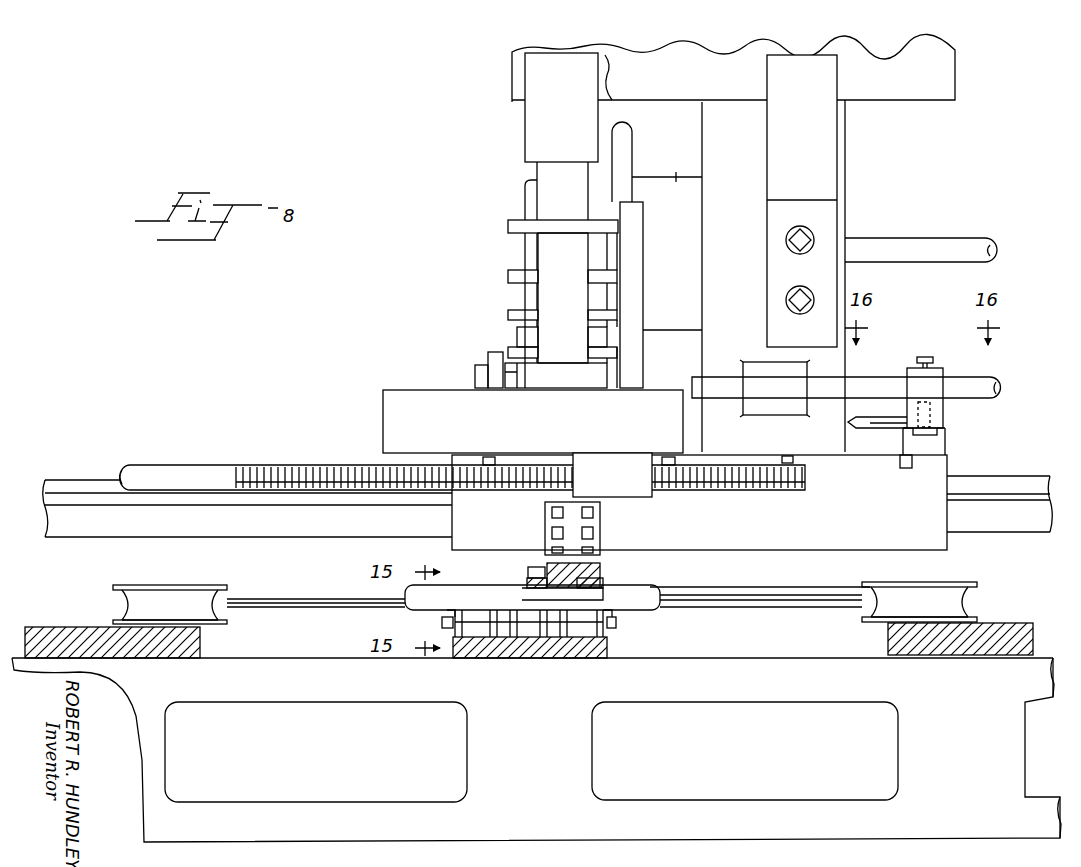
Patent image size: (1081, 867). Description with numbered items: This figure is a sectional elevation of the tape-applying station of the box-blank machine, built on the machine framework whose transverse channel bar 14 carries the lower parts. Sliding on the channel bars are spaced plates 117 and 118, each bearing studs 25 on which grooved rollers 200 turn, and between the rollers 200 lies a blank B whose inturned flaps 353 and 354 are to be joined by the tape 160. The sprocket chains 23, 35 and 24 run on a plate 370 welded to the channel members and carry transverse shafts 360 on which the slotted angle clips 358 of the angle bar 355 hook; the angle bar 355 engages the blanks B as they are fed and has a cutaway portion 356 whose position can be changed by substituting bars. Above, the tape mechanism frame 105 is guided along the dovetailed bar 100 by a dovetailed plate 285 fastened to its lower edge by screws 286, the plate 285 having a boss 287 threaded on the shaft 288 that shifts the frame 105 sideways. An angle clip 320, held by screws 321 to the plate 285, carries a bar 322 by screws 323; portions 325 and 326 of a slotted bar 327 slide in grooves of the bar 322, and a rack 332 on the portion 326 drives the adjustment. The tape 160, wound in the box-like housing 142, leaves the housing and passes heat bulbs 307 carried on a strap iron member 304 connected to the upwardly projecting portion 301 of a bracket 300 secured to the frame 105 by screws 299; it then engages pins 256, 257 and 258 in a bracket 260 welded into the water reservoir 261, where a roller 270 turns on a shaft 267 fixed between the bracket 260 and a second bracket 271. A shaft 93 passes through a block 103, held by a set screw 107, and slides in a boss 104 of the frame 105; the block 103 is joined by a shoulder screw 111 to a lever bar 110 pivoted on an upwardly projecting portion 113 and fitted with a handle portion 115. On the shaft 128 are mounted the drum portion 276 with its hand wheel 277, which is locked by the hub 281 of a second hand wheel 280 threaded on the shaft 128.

The transverse channel bar 14 is at (775, 697).
The sprocket chain 23 is at (530, 647).
The sprocket chain 24 is at (579, 647).
The stud 25 is at (926, 617).
The sprocket chain 35 is at (526, 647).
The shaft 93 is at (966, 382).
The dovetailed bar 100 is at (1010, 538).
The block 103 is at (908, 370).
The boss 104 is at (775, 408).
The tape mechanism frame 105 is at (847, 158).
The set screw 107 is at (928, 357).
The lever bar 110 is at (890, 429).
The shoulder screw 111 is at (938, 432).
The upwardly projecting portion 113 is at (940, 446).
The handle portion 115 is at (852, 418).
The plate 117 is at (1006, 623).
The plate 118 is at (82, 627).
The shaft 128 is at (953, 240).
The box-like housing 142 is at (950, 72).
The tape 160 is at (538, 172).
The grooved roller 200 is at (916, 582).
The pin 256 is at (509, 227).
The pin 257 is at (509, 278).
The pin 258 is at (598, 356).
The bracket 260 is at (644, 220).
The water reservoir 261 is at (384, 412).
The shaft 267 is at (512, 386).
The roller 270 is at (517, 340).
The bracket 271 is at (489, 363).
The drum portion 276 is at (667, 166).
The hand wheel 277 is at (633, 143).
The hand wheel 280 is at (525, 195).
The hub 281 is at (596, 251).
The dovetailed member 285 is at (947, 526).
The screw 286 is at (489, 457).
The boss 287 is at (594, 457).
The shaft 288 is at (335, 463).
The screw 299 is at (803, 262).
The bracket 300 is at (767, 293).
The upwardly projecting portion 301 is at (768, 186).
The strap iron member 304 is at (527, 150).
The incandescent bulb 307 is at (606, 70).
The angle clip 320 is at (545, 541).
The screw 321 is at (552, 512).
The bar 322 is at (600, 572).
The screw 323 is at (593, 549).
The portion of bar 325 is at (602, 586).
The portion of bar 326 is at (528, 582).
The bar 327 is at (522, 596).
The rack 332 is at (532, 567).
The inturned flap 353 is at (812, 596).
The inturned flap 354 is at (298, 599).
The angle bar 355 is at (658, 590).
The cutaway portion 356 is at (603, 600).
The angle clip 358 is at (447, 612).
The transverse shaft 360 is at (442, 626).
The plate 370 is at (556, 658).
The blank B is at (805, 610).